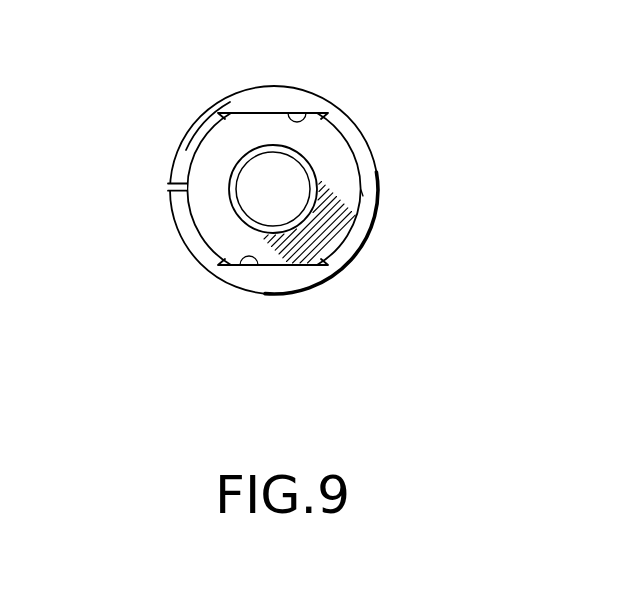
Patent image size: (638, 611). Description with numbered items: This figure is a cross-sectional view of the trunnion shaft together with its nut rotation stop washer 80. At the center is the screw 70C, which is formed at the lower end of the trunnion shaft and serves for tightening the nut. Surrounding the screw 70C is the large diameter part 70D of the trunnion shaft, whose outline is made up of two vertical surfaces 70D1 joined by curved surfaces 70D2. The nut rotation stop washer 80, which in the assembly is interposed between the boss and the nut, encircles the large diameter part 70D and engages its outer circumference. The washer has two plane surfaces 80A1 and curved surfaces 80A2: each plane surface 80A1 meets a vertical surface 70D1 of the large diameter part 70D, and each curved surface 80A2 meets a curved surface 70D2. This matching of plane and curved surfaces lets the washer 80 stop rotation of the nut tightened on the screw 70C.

The nut rotation stop washer 80 is at (342, 162).
The plane surface 80A1 is at (307, 113).
The curved surface 80A2 is at (197, 117).
The screw 70C is at (237, 212).
The large diameter part 70D is at (333, 148).
The vertical surface 70D1 is at (268, 113).
The curved surface 70D2 is at (193, 147).